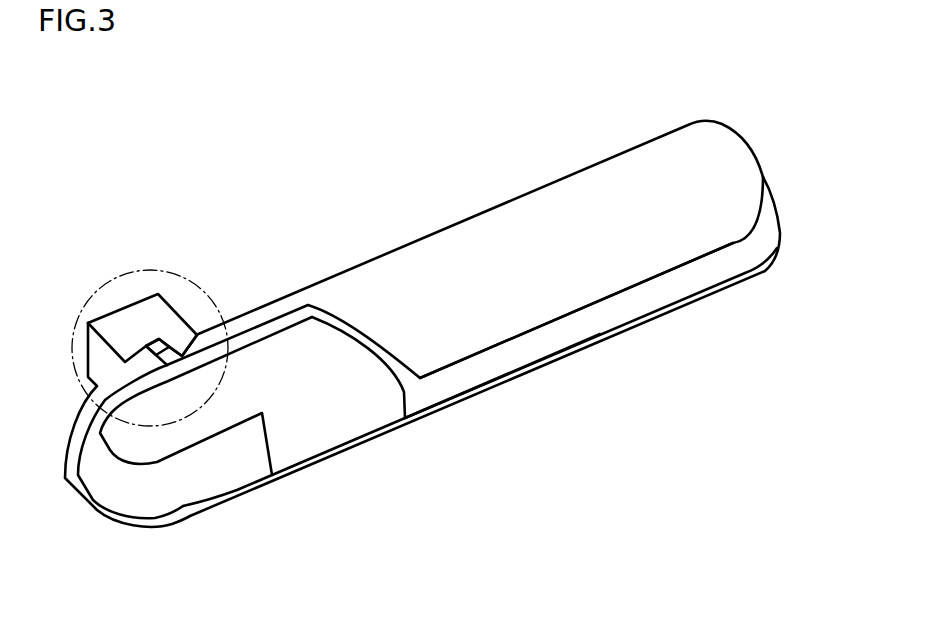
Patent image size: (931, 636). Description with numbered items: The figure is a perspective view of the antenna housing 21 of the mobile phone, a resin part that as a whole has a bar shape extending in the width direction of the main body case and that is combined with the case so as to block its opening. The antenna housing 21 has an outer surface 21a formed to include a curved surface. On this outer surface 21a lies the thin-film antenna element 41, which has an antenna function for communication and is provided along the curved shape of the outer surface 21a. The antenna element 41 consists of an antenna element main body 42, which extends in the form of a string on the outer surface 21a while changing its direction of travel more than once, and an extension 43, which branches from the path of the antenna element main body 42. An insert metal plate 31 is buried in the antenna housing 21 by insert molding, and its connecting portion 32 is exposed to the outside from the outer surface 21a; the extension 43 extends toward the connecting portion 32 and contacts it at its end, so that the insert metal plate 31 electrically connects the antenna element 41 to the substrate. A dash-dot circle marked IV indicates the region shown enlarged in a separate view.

The antenna housing 21 is at (742, 104).
The outer surface 21a is at (448, 337).
The insert metal plate 31 is at (151, 339).
The connecting portion 32 is at (158, 346).
The antenna element 41 is at (532, 366).
The antenna element main body 42 is at (596, 326).
The extension 43 is at (168, 351).
The section IV indicator IV is at (150, 268).